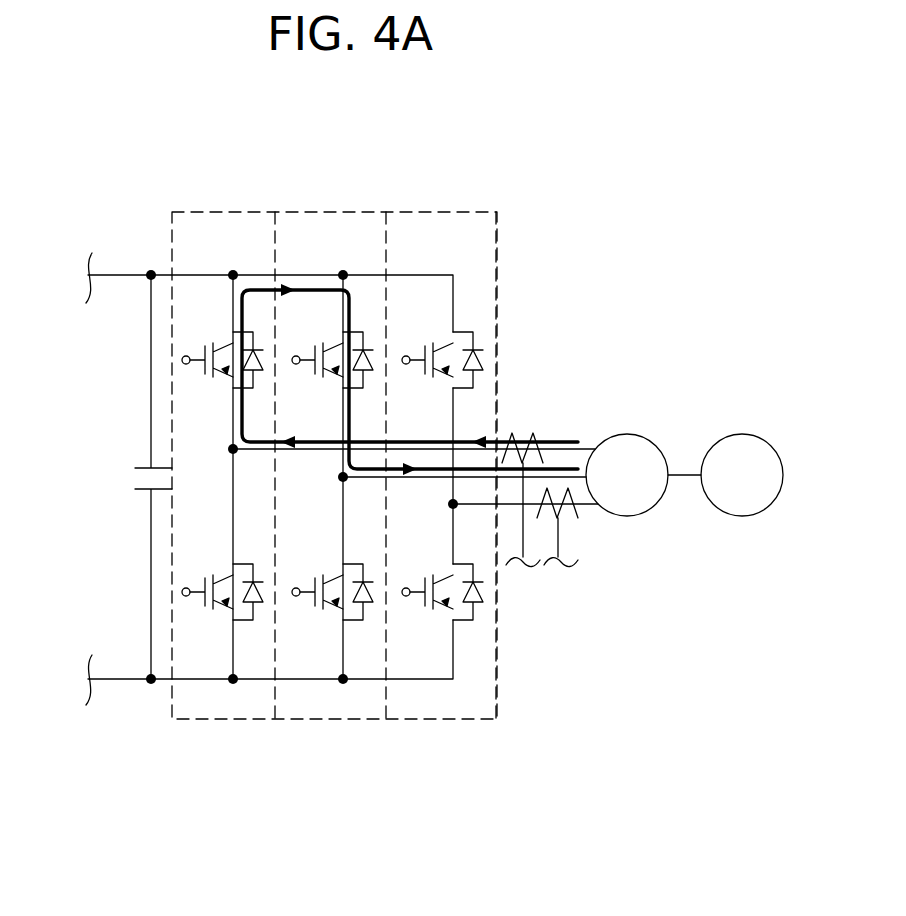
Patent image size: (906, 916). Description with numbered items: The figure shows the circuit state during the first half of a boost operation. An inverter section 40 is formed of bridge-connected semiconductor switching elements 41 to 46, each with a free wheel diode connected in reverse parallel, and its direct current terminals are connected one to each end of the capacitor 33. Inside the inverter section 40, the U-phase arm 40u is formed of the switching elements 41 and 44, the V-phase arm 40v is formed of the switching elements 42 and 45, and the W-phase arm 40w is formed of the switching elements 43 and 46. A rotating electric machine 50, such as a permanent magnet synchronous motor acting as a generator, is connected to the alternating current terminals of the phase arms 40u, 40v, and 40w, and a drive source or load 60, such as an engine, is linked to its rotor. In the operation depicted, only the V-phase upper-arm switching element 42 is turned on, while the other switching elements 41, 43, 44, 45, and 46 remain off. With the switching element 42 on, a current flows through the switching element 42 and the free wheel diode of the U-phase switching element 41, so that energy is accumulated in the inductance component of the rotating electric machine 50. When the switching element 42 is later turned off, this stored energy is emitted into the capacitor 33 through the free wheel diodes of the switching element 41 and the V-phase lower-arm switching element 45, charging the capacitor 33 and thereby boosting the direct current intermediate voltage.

The capacitor 33 is at (127, 477).
The inverter section 40 is at (436, 722).
The U-phase arm 40u is at (213, 208).
The V-phase arm 40v is at (317, 208).
The W-phase arm 40w is at (442, 210).
The U-phase switching element 41 is at (195, 382).
The V-phase upper-arm switching element 42 is at (305, 382).
The switching element 43 is at (413, 378).
The switching element 44 is at (195, 608).
The V-phase lower-arm switching element 45 is at (305, 608).
The switching element 46 is at (413, 608).
The rotating electric machine 50 is at (620, 507).
The drive source or load 60 is at (727, 507).